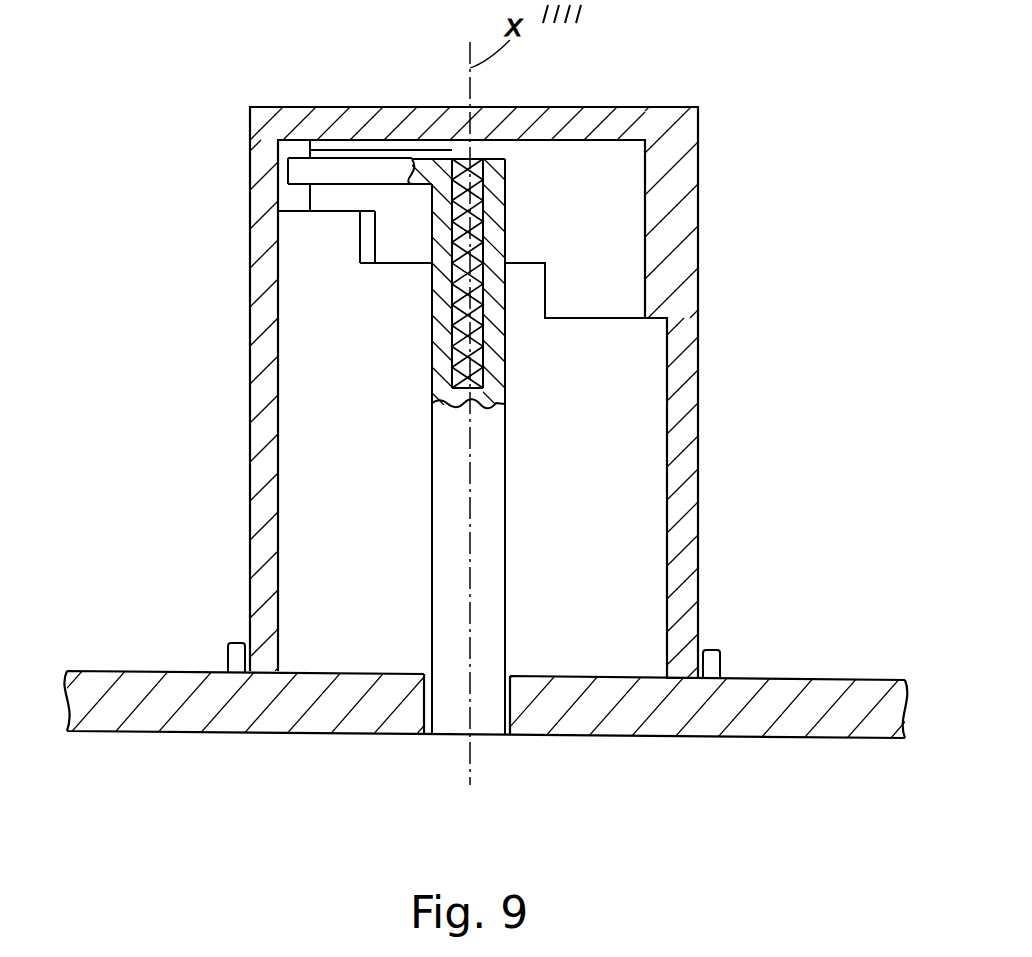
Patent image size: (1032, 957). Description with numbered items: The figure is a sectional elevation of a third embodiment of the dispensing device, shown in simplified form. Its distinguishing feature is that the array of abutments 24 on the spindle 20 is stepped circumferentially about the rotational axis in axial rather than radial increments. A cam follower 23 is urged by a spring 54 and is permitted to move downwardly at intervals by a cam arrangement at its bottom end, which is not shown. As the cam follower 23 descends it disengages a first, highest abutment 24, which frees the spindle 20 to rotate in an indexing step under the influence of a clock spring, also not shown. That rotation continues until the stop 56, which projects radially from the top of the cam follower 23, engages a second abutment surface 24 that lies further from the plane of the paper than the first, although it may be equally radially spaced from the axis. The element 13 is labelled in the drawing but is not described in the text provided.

The spindle 20 is at (790, 353).
The base plate 13 is at (204, 599).
The cam follower 23 is at (616, 165).
The spring 54 is at (475, 226).
The stop 56 is at (358, 164).
The abutments 24 is at (228, 195).